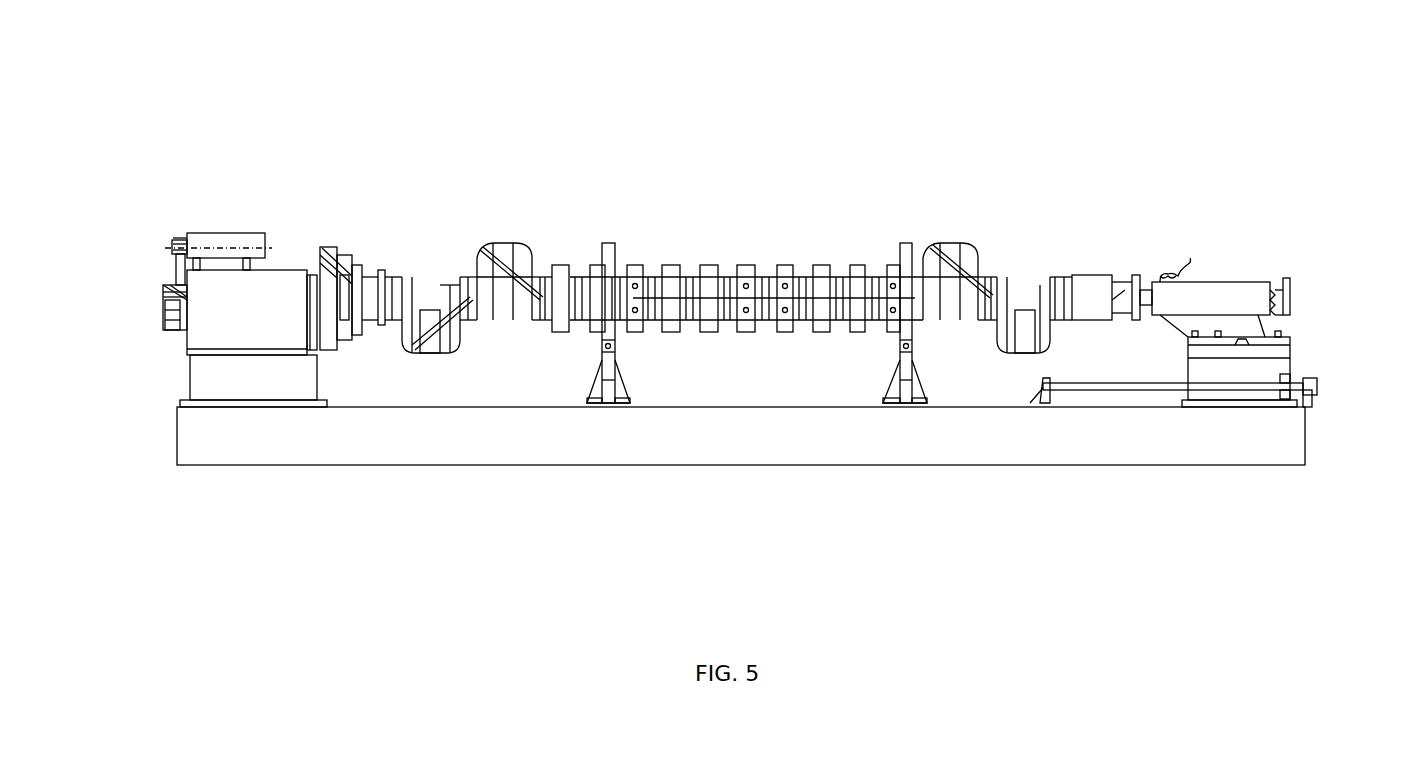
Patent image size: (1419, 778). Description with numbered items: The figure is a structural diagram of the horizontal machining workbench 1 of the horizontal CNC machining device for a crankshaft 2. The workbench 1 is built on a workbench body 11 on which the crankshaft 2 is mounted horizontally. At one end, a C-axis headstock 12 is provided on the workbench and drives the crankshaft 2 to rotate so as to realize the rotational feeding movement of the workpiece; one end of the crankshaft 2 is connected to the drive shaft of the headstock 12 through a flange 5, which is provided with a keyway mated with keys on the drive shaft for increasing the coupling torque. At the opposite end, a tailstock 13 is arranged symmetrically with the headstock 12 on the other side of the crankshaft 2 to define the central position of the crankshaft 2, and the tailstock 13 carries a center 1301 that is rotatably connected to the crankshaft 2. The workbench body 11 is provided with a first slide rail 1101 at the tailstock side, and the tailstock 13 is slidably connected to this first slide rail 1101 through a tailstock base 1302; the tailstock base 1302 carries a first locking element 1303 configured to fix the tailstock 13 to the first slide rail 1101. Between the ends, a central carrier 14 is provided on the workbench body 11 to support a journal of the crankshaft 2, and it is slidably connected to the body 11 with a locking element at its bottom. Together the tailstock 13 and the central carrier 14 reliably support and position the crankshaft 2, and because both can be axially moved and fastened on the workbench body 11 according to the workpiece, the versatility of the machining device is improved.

The horizontal machining workbench 1 is at (735, 125).
The workbench body 11 is at (502, 443).
The C-axis headstock 12 is at (205, 332).
The flange 5 is at (335, 268).
The crankshaft 2 is at (505, 257).
The central carrier 14 is at (612, 255).
The tailstock 13 is at (1207, 290).
The center 1301 is at (1228, 243).
The tailstock base 1302 is at (1288, 358).
The first locking element 1303 is at (1288, 375).
The first slide rail 1101 is at (1277, 402).